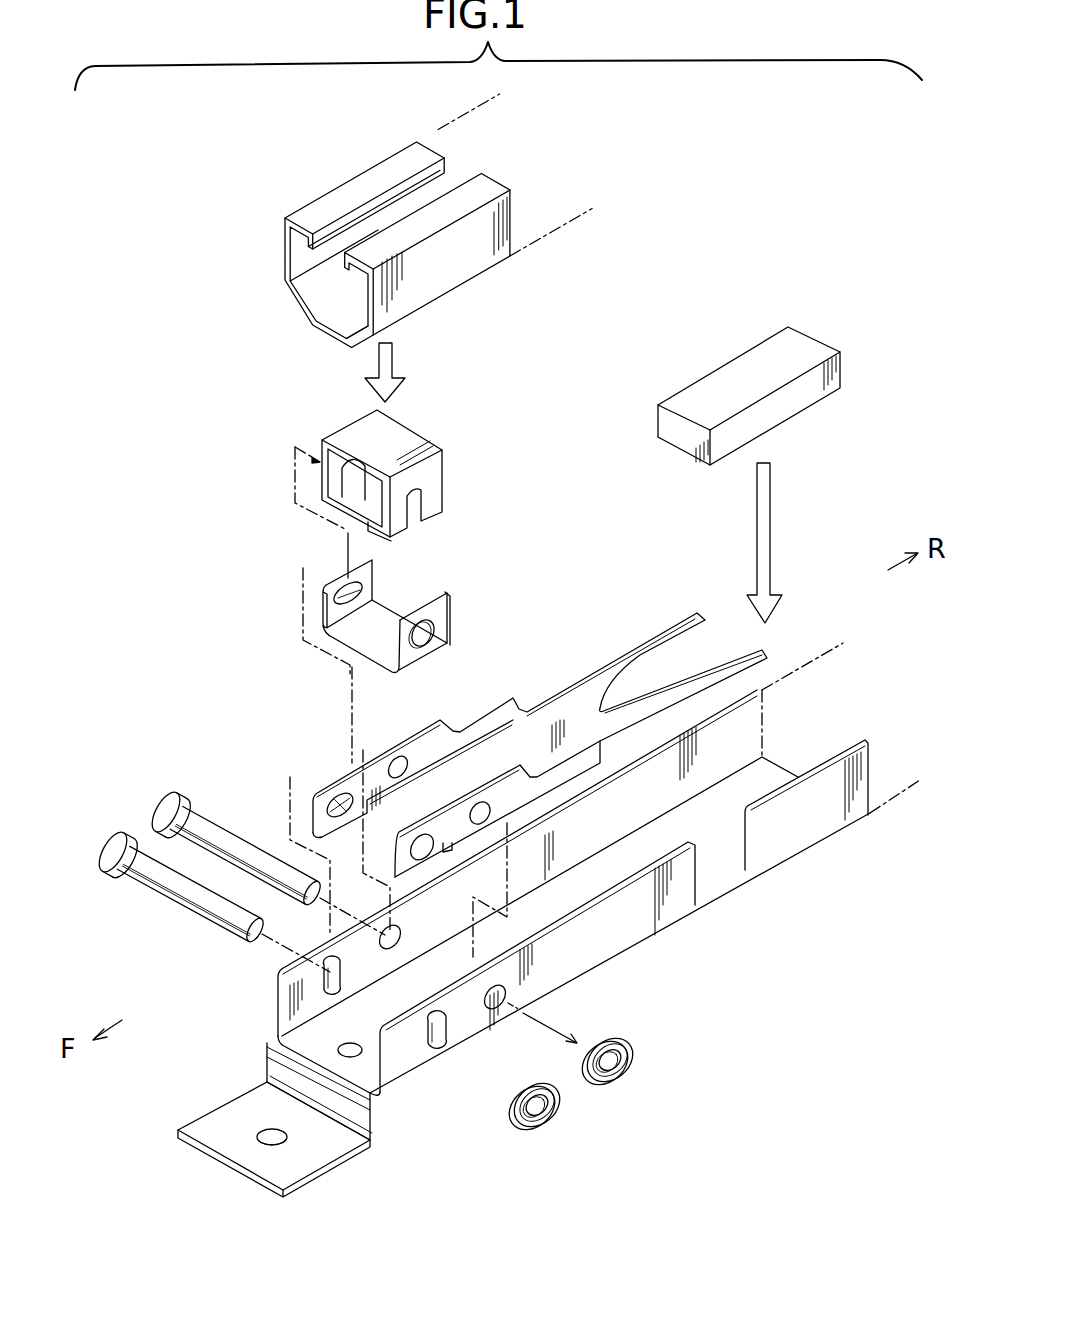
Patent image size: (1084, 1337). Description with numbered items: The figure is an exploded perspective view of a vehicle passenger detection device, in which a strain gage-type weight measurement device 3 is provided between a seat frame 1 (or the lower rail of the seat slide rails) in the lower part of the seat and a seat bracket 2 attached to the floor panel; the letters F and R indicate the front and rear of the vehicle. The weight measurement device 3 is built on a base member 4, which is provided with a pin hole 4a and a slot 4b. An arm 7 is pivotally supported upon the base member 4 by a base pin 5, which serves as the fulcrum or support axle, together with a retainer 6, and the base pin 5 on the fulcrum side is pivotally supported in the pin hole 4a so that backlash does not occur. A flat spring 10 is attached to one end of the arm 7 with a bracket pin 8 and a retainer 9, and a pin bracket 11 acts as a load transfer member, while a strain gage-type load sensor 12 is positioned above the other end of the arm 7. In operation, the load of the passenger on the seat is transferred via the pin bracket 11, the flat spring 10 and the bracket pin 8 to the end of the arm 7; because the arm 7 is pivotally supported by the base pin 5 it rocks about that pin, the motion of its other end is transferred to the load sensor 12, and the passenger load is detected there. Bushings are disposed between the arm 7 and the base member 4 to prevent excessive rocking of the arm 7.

The seat frame 1 is at (445, 275).
The seat bracket 2 is at (217, 1118).
The weight measurement device 3 is at (219, 578).
The base member 4 is at (637, 950).
The pin hole 4a is at (509, 995).
The slot 4b is at (447, 1044).
The base pin 5 is at (240, 826).
The retainer 6 is at (633, 1070).
The arm 7 is at (575, 695).
The bracket pin 8 is at (147, 890).
The retainer 9 is at (552, 1120).
The flat spring 10 is at (440, 618).
The pin bracket 11 is at (443, 468).
The load sensor 12 is at (730, 377).